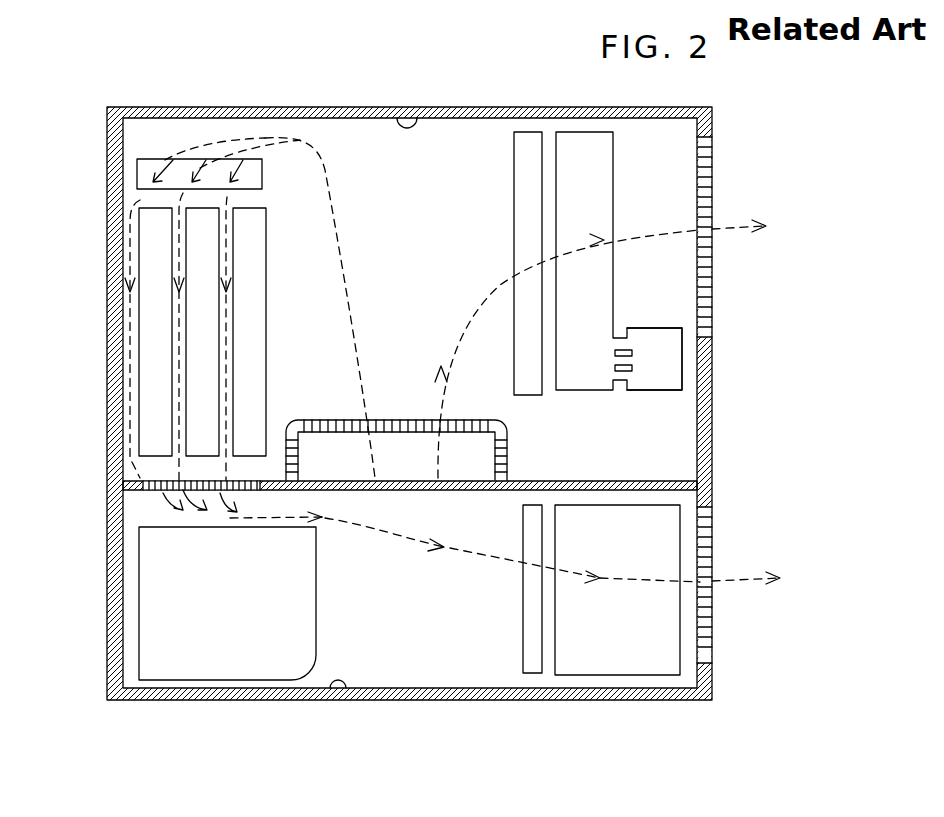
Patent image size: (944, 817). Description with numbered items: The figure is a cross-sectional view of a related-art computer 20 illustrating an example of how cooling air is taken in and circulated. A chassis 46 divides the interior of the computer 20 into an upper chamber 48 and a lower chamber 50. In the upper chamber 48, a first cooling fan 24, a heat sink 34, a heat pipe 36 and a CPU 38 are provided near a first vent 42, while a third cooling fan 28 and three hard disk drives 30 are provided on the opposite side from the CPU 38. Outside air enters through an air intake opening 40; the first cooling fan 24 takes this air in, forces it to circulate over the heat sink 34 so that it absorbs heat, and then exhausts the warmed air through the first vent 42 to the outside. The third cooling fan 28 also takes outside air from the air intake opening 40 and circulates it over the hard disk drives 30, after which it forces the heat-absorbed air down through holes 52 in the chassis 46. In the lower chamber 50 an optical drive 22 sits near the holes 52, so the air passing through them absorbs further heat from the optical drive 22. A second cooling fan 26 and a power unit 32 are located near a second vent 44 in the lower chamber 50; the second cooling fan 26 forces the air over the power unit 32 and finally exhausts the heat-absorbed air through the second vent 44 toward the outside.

The computer 20 is at (445, 413).
The optical drive 22 is at (183, 665).
The first cooling fan 24 is at (527, 150).
The second cooling fan 26 is at (532, 665).
The third cooling fan 28 is at (153, 160).
The hard disk drives 30 is at (248, 255).
The power unit 32 is at (668, 540).
The heat sink 34 is at (598, 290).
The heat pipe 36 is at (625, 343).
The CPU 38 is at (673, 377).
The air intake opening 40 is at (500, 446).
The first vent 42 is at (712, 158).
The second vent 44 is at (707, 660).
The chassis 46 is at (414, 533).
The upper chamber 48 is at (410, 118).
The lower chamber 50 is at (338, 700).
The holes 52 is at (150, 490).